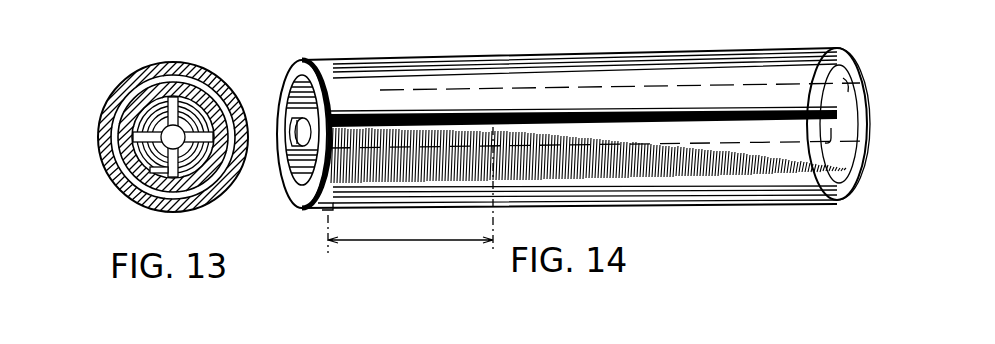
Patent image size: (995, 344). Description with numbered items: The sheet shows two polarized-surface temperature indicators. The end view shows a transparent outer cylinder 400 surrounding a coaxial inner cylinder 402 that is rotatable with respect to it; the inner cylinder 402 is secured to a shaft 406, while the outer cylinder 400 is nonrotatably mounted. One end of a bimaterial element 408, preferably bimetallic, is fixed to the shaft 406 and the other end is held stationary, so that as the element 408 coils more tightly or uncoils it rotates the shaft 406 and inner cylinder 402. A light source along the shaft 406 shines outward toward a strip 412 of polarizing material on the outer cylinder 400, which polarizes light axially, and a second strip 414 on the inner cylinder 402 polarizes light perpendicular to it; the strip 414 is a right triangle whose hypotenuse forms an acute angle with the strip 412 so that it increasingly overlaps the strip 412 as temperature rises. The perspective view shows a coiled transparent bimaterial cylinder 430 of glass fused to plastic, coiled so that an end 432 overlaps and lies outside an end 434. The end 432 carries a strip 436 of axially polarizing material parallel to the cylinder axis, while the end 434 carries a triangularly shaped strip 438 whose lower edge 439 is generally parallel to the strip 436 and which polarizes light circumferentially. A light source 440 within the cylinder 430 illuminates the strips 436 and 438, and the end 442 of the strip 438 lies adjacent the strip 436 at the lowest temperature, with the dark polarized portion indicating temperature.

In FIG. 13, the outer cylinder 400 is at (173, 64).
In FIG. 13, the inner cylinder 402 is at (196, 96).
In FIG. 13, the shaft 406 is at (168, 132).
In FIG. 13, the bimaterial element 408 is at (150, 118).
In FIG. 13, the strip 412 is at (98, 138).
In FIG. 13, the second strip 414 is at (114, 162).
In FIG. 14, the coiled transparent bimaterial cylinder 430 is at (653, 51).
In FIG. 14, the end 432 is at (318, 203).
In FIG. 14, the end 434 is at (308, 74).
In FIG. 14, the strip 436 is at (520, 70).
In FIG. 14, the triangularly shaped strip 438 is at (440, 112).
In FIG. 14, the lower edge 439 is at (553, 182).
In FIG. 14, the light source 440 is at (302, 182).
In FIG. 14, the end 442 is at (356, 112).